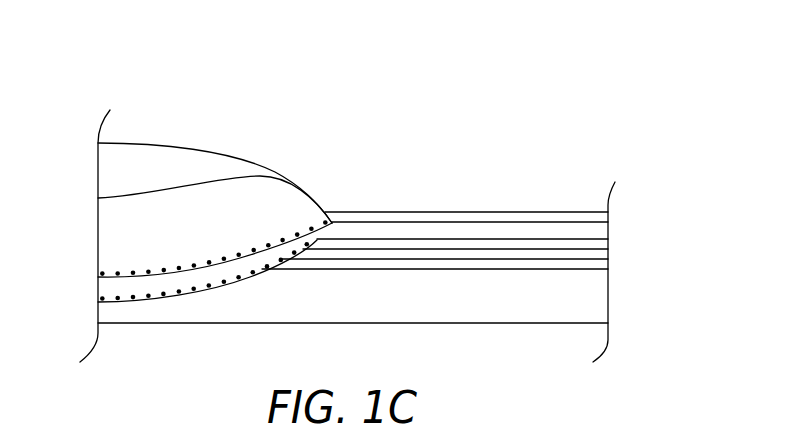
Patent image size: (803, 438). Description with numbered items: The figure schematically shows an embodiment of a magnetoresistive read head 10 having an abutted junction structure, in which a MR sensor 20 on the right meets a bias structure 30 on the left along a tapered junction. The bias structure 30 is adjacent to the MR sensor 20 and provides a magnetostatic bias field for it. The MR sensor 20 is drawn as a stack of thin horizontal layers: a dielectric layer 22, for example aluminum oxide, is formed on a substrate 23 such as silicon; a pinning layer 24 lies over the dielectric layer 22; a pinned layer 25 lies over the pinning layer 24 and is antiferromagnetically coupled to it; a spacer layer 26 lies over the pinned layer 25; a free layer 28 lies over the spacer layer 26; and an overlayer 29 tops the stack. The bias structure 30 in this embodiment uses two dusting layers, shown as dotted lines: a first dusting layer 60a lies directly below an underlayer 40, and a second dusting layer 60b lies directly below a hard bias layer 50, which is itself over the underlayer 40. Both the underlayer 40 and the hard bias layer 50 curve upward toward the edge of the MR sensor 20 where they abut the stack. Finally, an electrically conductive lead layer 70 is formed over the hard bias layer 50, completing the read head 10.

The magnetoresistive read head 10 is at (361, 79).
The MR sensor 20 is at (337, 138).
The dielectric layer 22 is at (585, 307).
The substrate 23 is at (575, 343).
The pinning layer 24 is at (588, 267).
The pinned layer 25 is at (588, 253).
The spacer layer 26 is at (588, 246).
The free layer 28 is at (587, 232).
The overlayer 29 is at (590, 220).
The bias structure 30 is at (87, 107).
The underlayer 40 is at (115, 288).
The hard bias layer 50 is at (112, 248).
The first dusting layer 60a is at (147, 305).
The second dusting layer 60b is at (213, 267).
The electrically conductive lead layer 70 is at (110, 172).